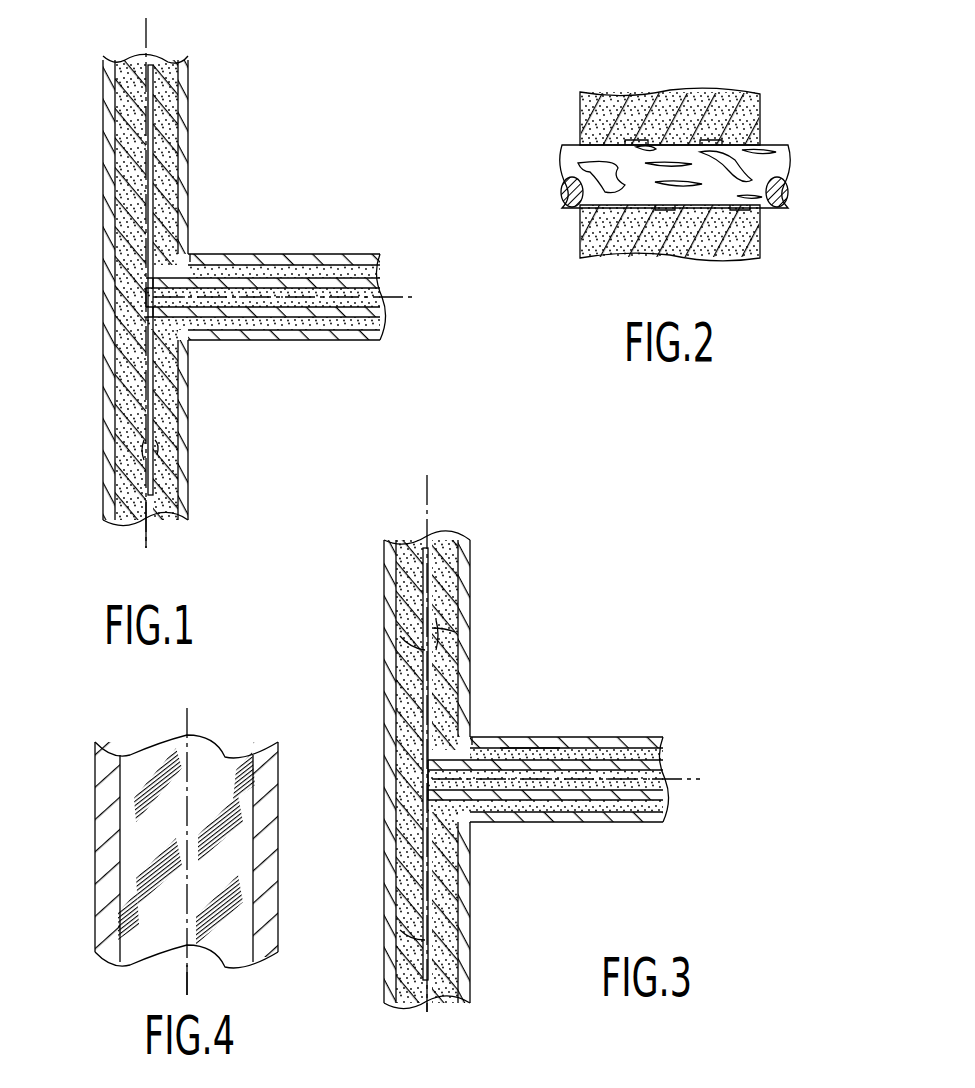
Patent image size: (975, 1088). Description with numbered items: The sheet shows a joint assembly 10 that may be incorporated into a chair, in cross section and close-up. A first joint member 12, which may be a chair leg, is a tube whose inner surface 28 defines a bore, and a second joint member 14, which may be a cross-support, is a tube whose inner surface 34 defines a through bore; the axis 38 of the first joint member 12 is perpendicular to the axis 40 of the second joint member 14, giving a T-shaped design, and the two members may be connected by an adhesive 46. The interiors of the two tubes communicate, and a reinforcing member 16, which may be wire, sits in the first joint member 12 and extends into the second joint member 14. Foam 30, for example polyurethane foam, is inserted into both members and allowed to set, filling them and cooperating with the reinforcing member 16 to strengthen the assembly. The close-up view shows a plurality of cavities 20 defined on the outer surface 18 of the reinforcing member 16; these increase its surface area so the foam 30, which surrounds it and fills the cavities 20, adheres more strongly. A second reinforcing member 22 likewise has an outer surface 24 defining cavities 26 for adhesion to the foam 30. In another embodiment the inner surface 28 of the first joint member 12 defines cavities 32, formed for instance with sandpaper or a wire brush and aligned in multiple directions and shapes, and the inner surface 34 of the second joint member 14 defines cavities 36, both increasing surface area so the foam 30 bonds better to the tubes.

In FIG. 1, the joint assembly 10 is at (248, 297).
In FIG. 3, the joint assembly 10 is at (560, 769).
In FIG. 1, the first joint member 12 is at (188, 480).
In FIG. 3, the first joint member 12 is at (470, 960).
In FIG. 4, the first joint member 12 is at (278, 862).
In FIG. 1, the second joint member 14 is at (309, 259).
In FIG. 3, the second joint member 14 is at (590, 765).
In FIG. 1, the reinforcing member 16 is at (160, 280).
In FIG. 2, the reinforcing member 16 is at (652, 169).
In FIG. 3, the reinforcing member 16 is at (476, 764).
In FIG. 1, the outer surface 18 is at (130, 456).
In FIG. 2, the outer surface 18 is at (578, 208).
In FIG. 3, the outer surface 18 is at (446, 876).
In FIG. 1, the cavities 20 is at (163, 443).
In FIG. 2, the cavities 20 is at (608, 133).
In FIG. 1, the second reinforcing member 22 is at (190, 115).
In FIG. 3, the second reinforcing member 22 is at (437, 597).
In FIG. 1, the outer surface 24 is at (128, 128).
In FIG. 3, the outer surface 24 is at (445, 632).
In FIG. 1, the cavities 26 is at (160, 150).
In FIG. 1, the inner surface 28 is at (168, 518).
In FIG. 3, the inner surface 28 is at (445, 1005).
In FIG. 4, the inner surface 28 is at (218, 762).
In FIG. 1, the foam 30 is at (202, 290).
In FIG. 2, the foam 30 is at (698, 100).
In FIG. 3, the foam 30 is at (402, 598).
In FIG. 3, the cavities 32 is at (402, 641).
In FIG. 4, the cavities 32 is at (160, 778).
In FIG. 1, the inner surface 34 is at (384, 312).
In FIG. 3, the inner surface 34 is at (667, 794).
In FIG. 3, the cavities 36 is at (521, 750).
In FIG. 1, the axis 38 is at (151, 28).
In FIG. 3, the axis 38 is at (432, 487).
In FIG. 4, the axis 38 is at (190, 987).
In FIG. 1, the axis 40 is at (408, 292).
In FIG. 3, the axis 40 is at (705, 779).
In FIG. 1, the adhesive 46 is at (190, 262).
In FIG. 3, the adhesive 46 is at (472, 737).